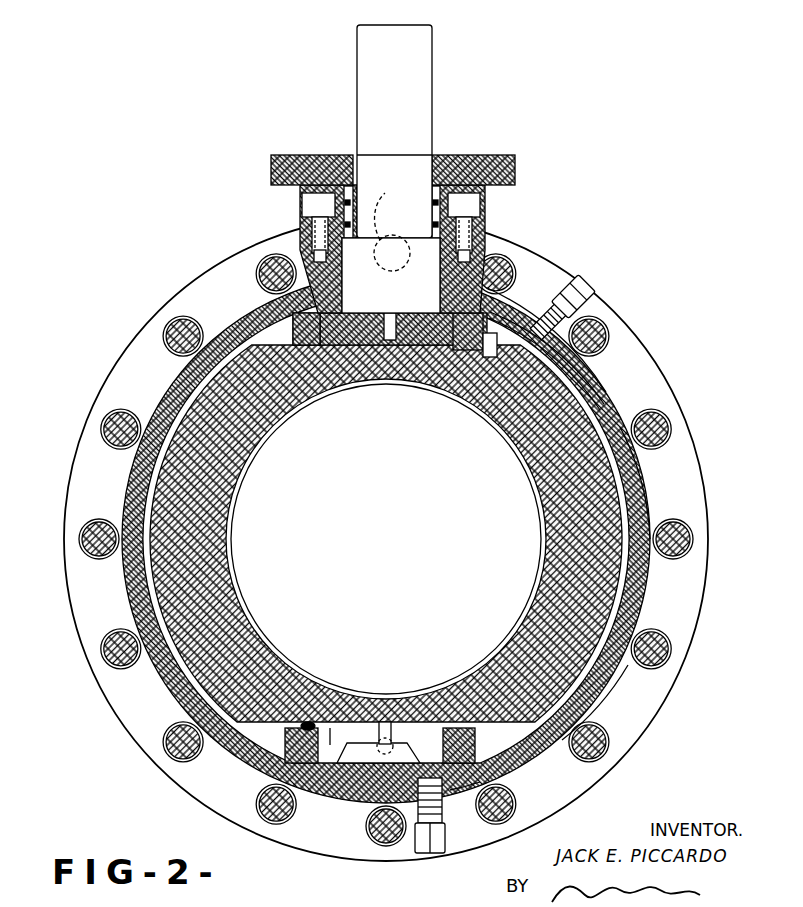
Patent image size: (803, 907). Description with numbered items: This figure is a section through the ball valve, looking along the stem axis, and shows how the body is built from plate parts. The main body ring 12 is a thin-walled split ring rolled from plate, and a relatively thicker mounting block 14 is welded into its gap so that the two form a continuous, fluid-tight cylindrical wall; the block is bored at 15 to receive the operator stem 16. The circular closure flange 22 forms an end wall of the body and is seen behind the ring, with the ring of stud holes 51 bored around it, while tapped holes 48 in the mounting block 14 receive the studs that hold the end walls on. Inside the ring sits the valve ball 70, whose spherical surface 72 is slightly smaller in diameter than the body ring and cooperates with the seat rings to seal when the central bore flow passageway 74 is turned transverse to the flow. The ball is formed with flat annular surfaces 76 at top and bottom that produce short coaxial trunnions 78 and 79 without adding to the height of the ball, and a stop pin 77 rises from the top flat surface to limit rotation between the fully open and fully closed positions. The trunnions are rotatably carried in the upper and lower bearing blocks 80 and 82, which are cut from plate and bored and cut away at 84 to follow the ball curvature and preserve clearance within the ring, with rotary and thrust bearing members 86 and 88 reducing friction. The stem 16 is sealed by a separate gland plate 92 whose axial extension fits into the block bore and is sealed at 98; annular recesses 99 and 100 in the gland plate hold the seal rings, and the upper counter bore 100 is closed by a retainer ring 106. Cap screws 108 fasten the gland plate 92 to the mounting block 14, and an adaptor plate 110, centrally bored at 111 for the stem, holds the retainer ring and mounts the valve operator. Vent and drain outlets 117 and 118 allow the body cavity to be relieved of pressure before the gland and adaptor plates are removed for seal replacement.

The main body ring 12 is at (640, 478).
The mounting block 14 is at (485, 232).
The bore 15 is at (342, 281).
The operator stem 16 is at (424, 73).
The closure flange 22 is at (688, 515).
The tapped holes 48 is at (395, 228).
The stud holes 51 is at (193, 748).
The valve ball 70 is at (485, 398).
The spherical surface 72 is at (612, 690).
The central bore flow passageway 74 is at (232, 492).
The flat annular surfaces 76 is at (276, 347).
The stop pin 77 is at (567, 365).
The upper trunnion 78 is at (452, 334).
The lower trunnion 79 is at (435, 738).
The upper bearing block 80 is at (273, 310).
The lower bearing block 82 is at (495, 756).
The bearing block bore and cutaway 84 is at (488, 318).
The rotary bearing member 86 is at (330, 333).
The thrust bearing member 88 is at (310, 722).
The gland plate 92 is at (302, 221).
The seal 98 is at (437, 240).
The lower annular recess 99 is at (328, 212).
The upper annular recess 100 is at (298, 158).
The retainer ring 106 is at (352, 168).
The cap screws 108 is at (474, 208).
The adaptor plate 110 is at (468, 158).
The adaptor plate bore 111 is at (433, 165).
The vent outlet 117 is at (598, 296).
The drain outlet 118 is at (418, 840).